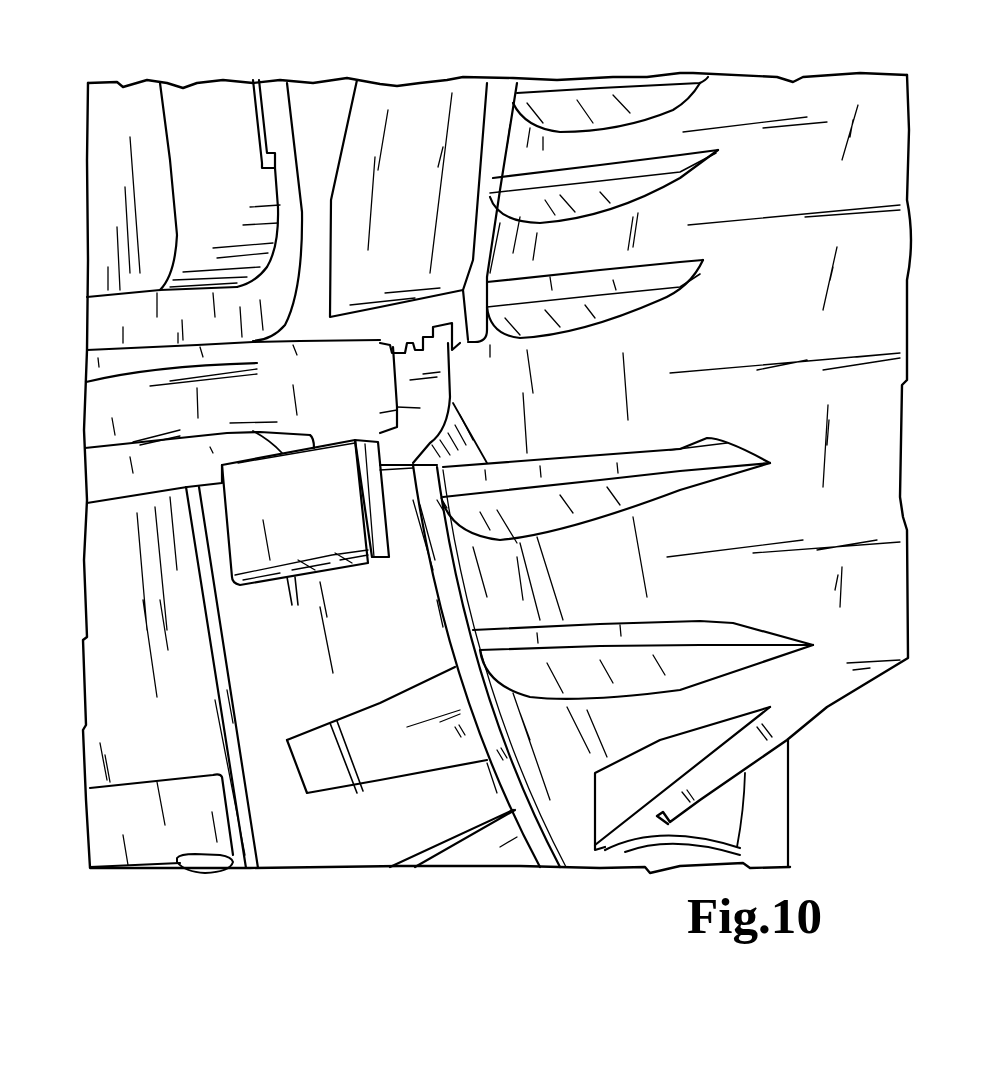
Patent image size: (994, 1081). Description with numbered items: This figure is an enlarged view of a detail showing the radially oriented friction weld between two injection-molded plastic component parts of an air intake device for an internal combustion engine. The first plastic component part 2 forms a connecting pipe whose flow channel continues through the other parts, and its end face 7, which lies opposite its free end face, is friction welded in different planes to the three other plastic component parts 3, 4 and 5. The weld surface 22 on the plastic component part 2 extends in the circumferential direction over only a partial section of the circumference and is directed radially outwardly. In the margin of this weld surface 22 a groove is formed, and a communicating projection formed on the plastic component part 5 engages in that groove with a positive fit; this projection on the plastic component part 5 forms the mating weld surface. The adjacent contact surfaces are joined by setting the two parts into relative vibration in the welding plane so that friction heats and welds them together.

The first plastic component part 2 is at (818, 690).
The plastic component part 3 is at (120, 408).
The plastic component part 4 is at (123, 817).
The plastic component part 5 is at (255, 112).
The end face 7 is at (380, 385).
The weld surface 22 is at (425, 352).